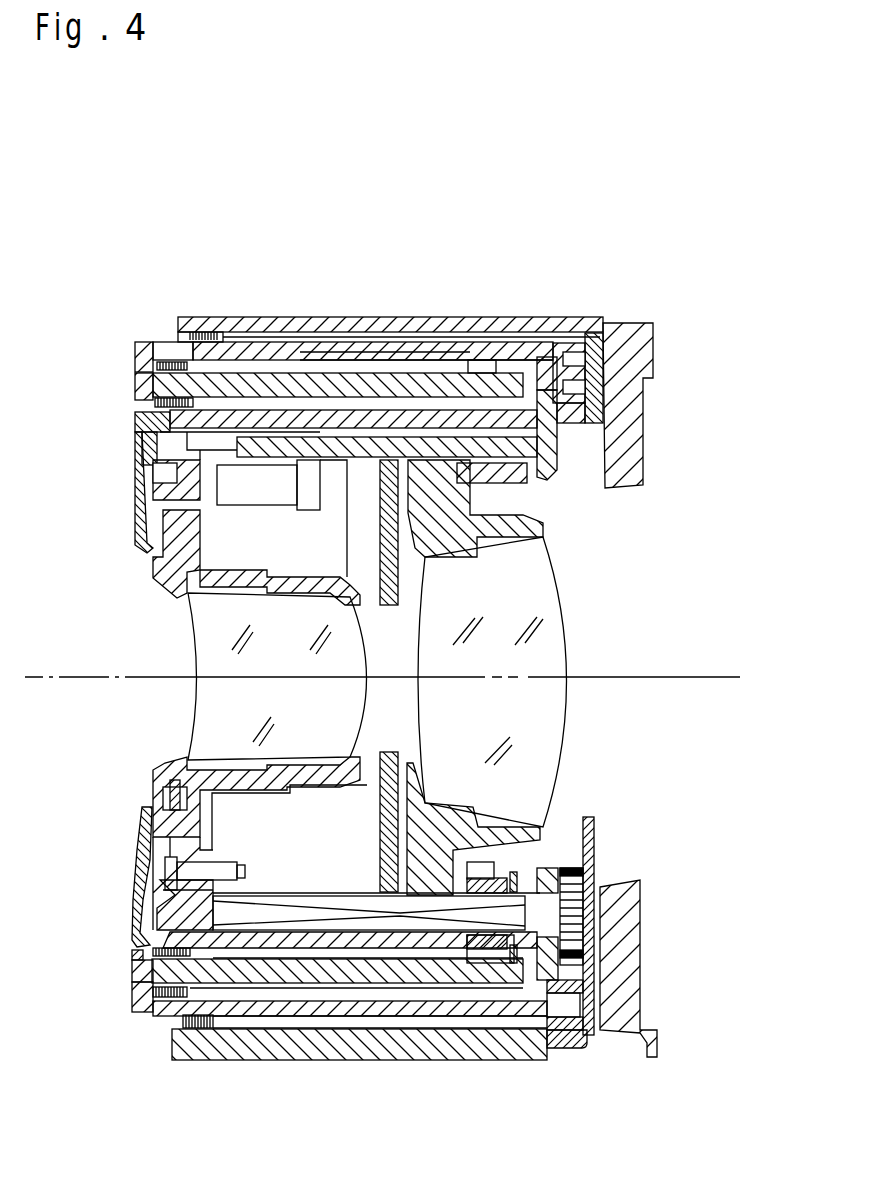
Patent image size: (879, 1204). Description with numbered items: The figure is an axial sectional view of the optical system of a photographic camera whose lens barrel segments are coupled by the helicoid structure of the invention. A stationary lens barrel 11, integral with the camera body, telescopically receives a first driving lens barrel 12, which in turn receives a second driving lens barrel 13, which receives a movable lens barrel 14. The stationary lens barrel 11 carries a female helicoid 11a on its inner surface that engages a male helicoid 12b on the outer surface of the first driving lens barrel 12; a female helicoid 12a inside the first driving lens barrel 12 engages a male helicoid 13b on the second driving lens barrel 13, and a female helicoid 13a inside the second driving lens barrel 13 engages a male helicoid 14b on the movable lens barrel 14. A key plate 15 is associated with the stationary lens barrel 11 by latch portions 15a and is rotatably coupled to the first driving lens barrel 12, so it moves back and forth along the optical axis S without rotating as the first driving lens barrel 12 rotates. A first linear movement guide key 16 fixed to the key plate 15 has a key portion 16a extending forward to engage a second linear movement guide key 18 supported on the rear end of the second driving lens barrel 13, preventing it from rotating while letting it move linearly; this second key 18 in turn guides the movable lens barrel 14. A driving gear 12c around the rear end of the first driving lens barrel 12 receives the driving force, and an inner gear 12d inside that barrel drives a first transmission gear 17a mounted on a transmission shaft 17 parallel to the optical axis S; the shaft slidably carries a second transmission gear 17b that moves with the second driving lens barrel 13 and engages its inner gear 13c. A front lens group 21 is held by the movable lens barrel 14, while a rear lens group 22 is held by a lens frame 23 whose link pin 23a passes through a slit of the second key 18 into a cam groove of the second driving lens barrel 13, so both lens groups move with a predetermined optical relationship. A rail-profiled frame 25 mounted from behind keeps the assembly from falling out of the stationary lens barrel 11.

The stationary lens barrel 11 is at (593, 323).
The female helicoid 11a is at (222, 317).
The first driving lens barrel 12 is at (313, 343).
The female helicoid 12a is at (433, 357).
The male helicoid 12b is at (520, 347).
The driving gear 12c is at (575, 357).
The inner gear 12d is at (575, 390).
The second driving lens barrel 13 is at (232, 335).
The female helicoid 13a is at (254, 392).
The male helicoid 13b is at (480, 363).
The inner gear 13c is at (477, 985).
The movable lens barrel 14 is at (157, 430).
The male helicoid 14b is at (391, 405).
The key plate 15 is at (573, 900).
The latch portions 15a is at (552, 1050).
The first linear movement guide key 16 is at (557, 457).
The key portion 16a is at (540, 478).
The transmission shaft 17 is at (555, 840).
The first transmission gear 17a is at (583, 893).
The second transmission gear 17b is at (527, 885).
The second linear movement guide key 18 is at (210, 447).
The front lens group 21 is at (205, 740).
The rear lens group 22 is at (550, 653).
The lens frame 23 is at (508, 530).
The link pin 23a is at (395, 985).
The rail-profiled frame 25 is at (633, 438).
The optical axis S is at (128, 677).